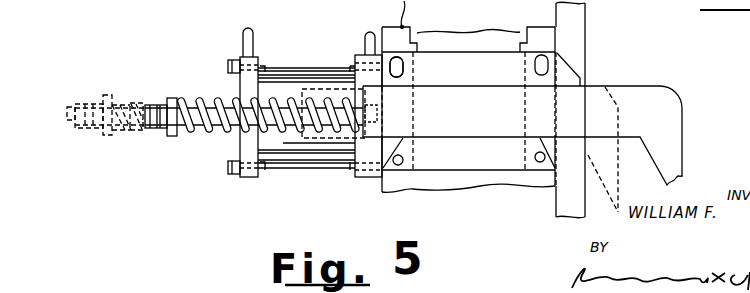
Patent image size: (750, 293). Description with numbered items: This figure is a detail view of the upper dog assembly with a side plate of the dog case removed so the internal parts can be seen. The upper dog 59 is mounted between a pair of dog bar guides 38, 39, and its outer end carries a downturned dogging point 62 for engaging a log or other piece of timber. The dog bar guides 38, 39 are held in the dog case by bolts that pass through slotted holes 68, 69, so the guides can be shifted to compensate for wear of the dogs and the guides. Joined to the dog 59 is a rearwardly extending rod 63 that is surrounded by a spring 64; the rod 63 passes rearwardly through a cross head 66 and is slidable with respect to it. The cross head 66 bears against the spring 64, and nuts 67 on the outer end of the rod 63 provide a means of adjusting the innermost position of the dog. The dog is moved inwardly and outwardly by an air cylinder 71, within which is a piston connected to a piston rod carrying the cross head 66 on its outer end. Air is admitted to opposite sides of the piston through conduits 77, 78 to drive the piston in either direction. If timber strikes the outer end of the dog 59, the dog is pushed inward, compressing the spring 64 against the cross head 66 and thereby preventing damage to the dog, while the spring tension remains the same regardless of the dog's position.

The dog bar guide 38 is at (457, 72).
The dog bar guide 39 is at (498, 157).
The upper dog 59 is at (670, 107).
The dogging point 62 is at (622, 212).
The rod 63 is at (208, 97).
The spring 64 is at (215, 133).
The cross head 66 is at (173, 97).
The nuts 67 is at (162, 132).
The slotted hole 68 is at (400, 62).
The slotted hole 69 is at (543, 67).
The air cylinder 71 is at (293, 88).
The conduit 77 is at (245, 43).
The conduit 78 is at (367, 33).